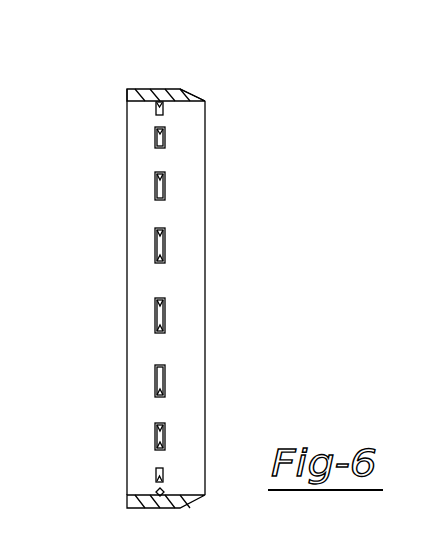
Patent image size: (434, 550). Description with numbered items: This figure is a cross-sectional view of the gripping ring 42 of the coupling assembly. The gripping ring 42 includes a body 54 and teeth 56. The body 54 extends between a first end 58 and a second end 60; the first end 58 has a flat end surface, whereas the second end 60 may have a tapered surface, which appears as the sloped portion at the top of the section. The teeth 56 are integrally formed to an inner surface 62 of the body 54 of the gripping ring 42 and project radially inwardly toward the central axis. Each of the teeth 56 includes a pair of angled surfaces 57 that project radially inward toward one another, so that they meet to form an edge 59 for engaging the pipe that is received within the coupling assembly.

The gripping ring 42 is at (222, 68).
The body 54 is at (137, 88).
The teeth 56 is at (155, 186).
The angled surfaces 57 is at (155, 385).
The first end 58 is at (127, 93).
The edge 59 is at (165, 437).
The second end 60 is at (205, 101).
The inner surface 62 is at (187, 206).